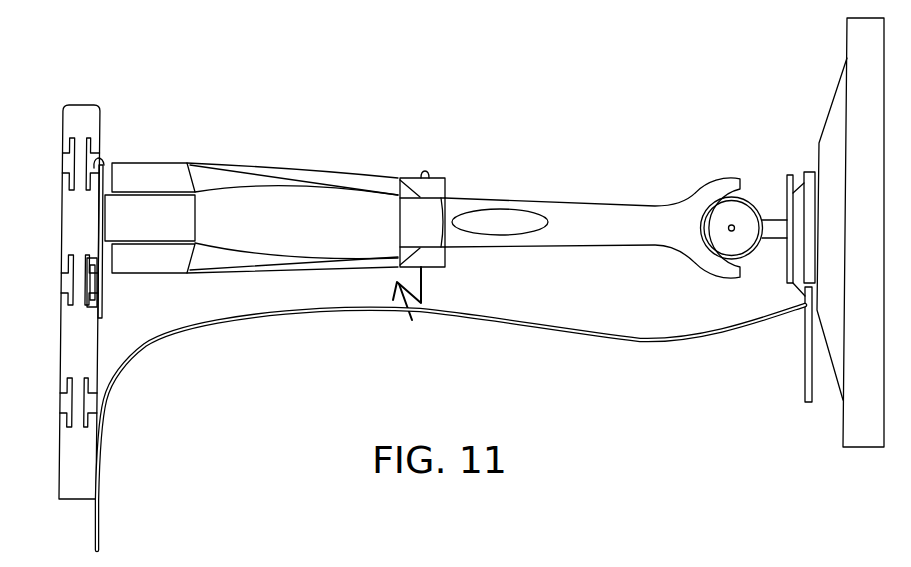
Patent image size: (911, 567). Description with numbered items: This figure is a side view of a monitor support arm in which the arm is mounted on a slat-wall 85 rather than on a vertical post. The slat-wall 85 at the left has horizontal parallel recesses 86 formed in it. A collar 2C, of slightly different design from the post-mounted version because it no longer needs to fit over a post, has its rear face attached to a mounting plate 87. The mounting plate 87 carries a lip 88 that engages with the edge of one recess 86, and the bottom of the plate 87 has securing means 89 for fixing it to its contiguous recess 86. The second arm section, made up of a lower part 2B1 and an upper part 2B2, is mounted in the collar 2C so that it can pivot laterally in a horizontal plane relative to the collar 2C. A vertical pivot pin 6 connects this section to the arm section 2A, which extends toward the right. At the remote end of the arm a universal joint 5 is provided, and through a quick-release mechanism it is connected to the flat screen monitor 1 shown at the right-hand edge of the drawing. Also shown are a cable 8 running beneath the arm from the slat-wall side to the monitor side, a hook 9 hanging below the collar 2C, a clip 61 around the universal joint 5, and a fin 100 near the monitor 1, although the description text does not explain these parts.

The flat screen monitor 1 is at (847, 38).
The arm section 2A is at (607, 218).
The lower part of arm section 2B 2B1 is at (283, 260).
The upper part of arm section 2B 2B2 is at (308, 170).
The collar 2C is at (182, 221).
The universal joint 5 is at (716, 220).
The vertical pivot pin 6 is at (428, 172).
The cable 8 is at (588, 338).
The hook wire 9 is at (423, 288).
The clip 61 is at (693, 267).
The slat-wall 85 is at (85, 118).
The recesses 86 is at (67, 165).
The mounting plate 87 is at (101, 166).
The lip 88 is at (94, 167).
The securing means 89 is at (87, 297).
The fin 100 is at (806, 377).